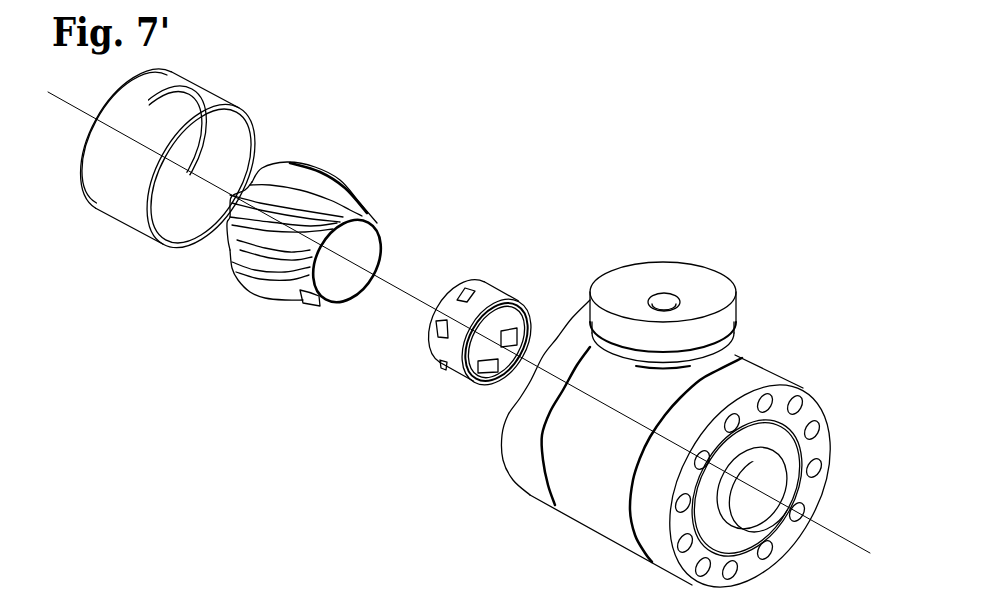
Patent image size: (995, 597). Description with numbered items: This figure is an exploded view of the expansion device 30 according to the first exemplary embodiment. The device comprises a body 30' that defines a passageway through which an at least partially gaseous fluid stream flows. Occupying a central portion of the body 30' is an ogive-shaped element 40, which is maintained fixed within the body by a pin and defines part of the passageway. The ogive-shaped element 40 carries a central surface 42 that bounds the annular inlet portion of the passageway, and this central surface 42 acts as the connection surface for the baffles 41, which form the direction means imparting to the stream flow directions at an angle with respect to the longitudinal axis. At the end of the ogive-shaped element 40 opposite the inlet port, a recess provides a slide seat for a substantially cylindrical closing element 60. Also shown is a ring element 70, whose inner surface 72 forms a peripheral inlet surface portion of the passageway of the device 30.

The expansion device 30 is at (682, 346).
The body 30' is at (682, 429).
The ogive-shaped element 40 is at (305, 244).
The baffles 41 is at (291, 164).
The central surface 42 is at (366, 205).
The closing element 60 is at (439, 371).
The ring element 70 is at (179, 182).
The inner surface 72 is at (231, 127).